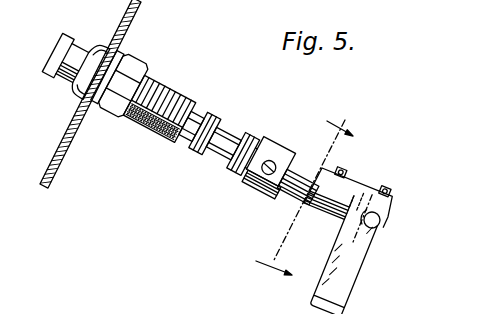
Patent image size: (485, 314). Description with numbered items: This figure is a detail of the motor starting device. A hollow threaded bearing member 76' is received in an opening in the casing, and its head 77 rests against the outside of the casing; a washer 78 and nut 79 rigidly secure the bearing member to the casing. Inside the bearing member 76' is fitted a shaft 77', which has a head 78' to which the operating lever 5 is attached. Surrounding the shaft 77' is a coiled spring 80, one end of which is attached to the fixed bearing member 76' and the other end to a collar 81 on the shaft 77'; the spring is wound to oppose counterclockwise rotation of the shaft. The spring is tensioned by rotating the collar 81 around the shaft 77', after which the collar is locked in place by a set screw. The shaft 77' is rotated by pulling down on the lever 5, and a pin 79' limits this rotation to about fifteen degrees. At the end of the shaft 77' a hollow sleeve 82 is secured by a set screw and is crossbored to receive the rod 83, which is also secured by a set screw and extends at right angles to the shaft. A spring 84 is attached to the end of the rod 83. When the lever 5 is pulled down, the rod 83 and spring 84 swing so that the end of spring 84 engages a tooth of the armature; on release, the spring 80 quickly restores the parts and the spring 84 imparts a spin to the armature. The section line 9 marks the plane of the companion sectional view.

The operating lever 5 is at (62, 38).
The section line 9- 9 is at (298, 193).
The hollow threaded bearing member 76' is at (160, 104).
The head 77 is at (90, 94).
The shaft 77' is at (288, 201).
The washer 78 is at (123, 71).
The head 78' is at (63, 79).
The nut 79 is at (164, 84).
The pin 79' is at (152, 137).
The coiled spring 80 is at (207, 148).
The collar 81 is at (254, 186).
The hollow sleeve 82 is at (345, 180).
The rod 83 is at (381, 222).
The spring 84 is at (358, 271).